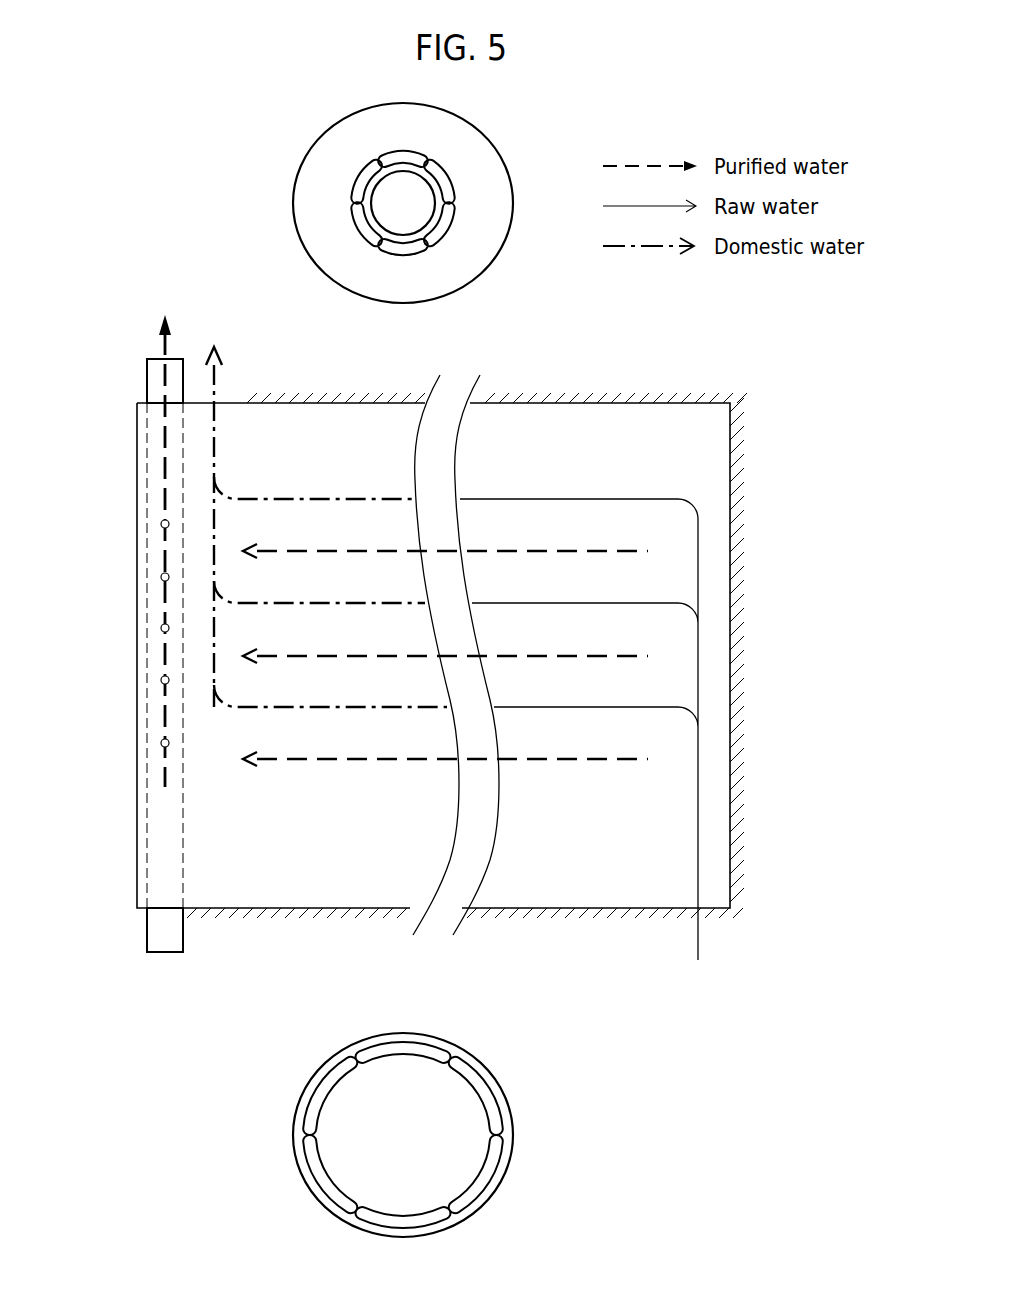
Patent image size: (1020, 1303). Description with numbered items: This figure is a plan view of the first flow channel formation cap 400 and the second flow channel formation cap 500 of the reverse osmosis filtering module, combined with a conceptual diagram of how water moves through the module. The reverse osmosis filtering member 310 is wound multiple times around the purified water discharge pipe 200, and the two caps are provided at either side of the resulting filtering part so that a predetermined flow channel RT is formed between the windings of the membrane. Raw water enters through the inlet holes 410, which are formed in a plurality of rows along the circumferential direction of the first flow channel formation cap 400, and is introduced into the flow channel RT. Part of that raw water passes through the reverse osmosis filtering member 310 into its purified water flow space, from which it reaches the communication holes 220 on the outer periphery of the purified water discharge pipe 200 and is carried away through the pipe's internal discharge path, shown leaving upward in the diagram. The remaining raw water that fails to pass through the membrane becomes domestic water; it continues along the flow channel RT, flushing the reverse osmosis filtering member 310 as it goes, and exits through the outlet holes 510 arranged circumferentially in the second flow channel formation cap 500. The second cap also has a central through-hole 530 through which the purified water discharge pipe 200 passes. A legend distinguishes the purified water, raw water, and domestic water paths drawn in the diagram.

The purified water discharge pipe 200 is at (120, 633).
The communication hole 220 is at (160, 744).
The reverse osmosis filtering member 310 is at (314, 914).
The first flow channel formation cap 400 is at (389, 1135).
The inlet hole 410 is at (478, 1083).
The second flow channel formation cap 500 is at (361, 211).
The outlet hole 510 is at (412, 160).
The through-hole 530 is at (417, 205).
The predetermined flow channel RT is at (358, 740).